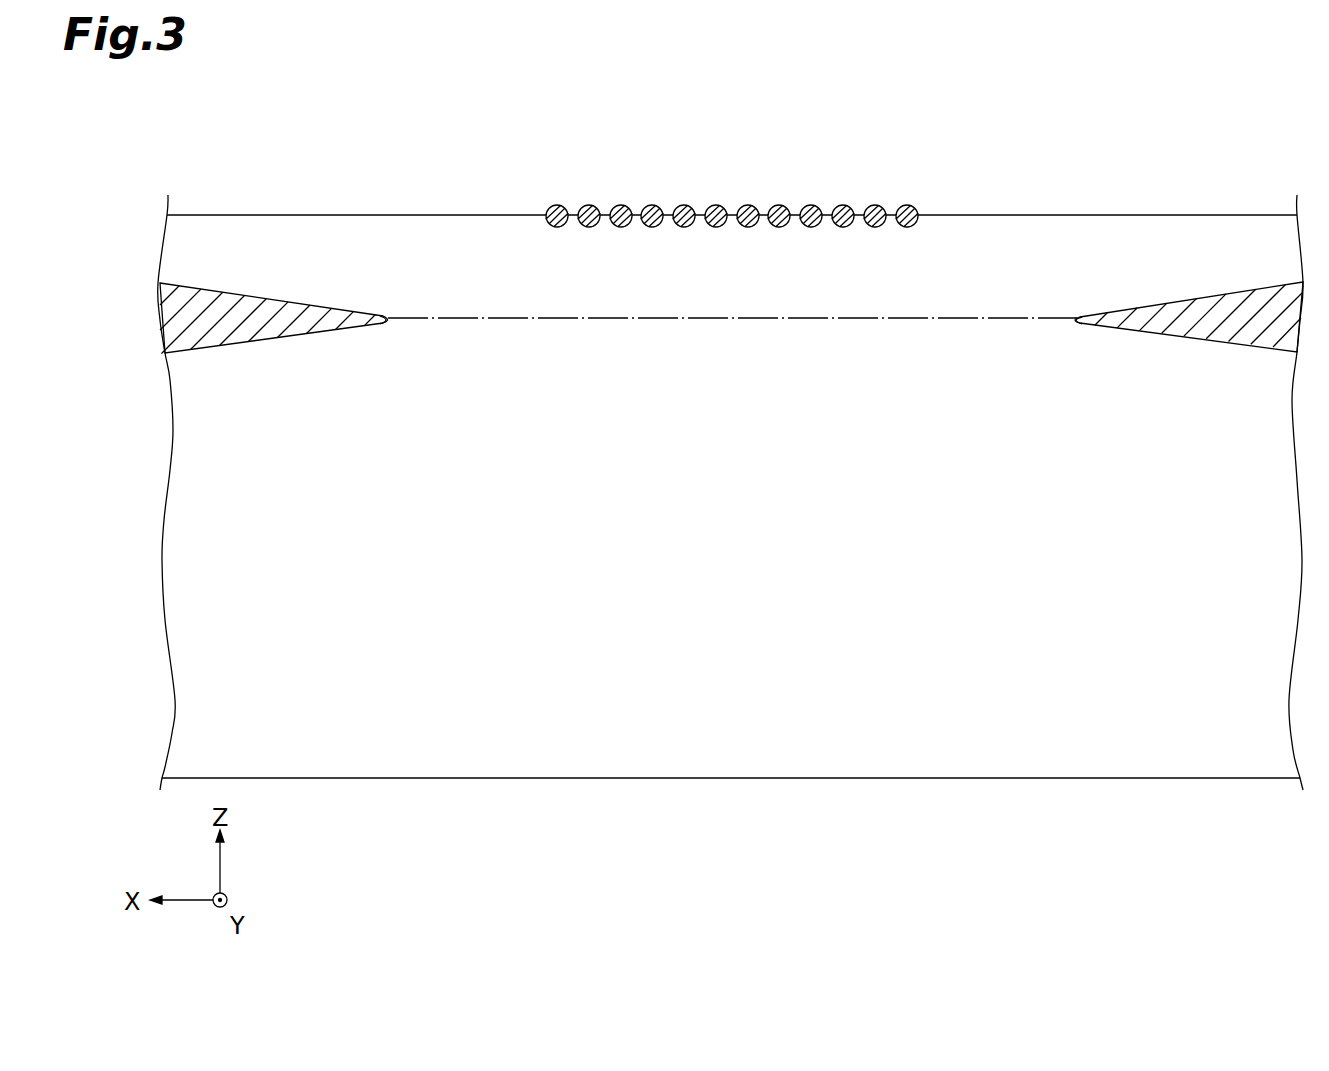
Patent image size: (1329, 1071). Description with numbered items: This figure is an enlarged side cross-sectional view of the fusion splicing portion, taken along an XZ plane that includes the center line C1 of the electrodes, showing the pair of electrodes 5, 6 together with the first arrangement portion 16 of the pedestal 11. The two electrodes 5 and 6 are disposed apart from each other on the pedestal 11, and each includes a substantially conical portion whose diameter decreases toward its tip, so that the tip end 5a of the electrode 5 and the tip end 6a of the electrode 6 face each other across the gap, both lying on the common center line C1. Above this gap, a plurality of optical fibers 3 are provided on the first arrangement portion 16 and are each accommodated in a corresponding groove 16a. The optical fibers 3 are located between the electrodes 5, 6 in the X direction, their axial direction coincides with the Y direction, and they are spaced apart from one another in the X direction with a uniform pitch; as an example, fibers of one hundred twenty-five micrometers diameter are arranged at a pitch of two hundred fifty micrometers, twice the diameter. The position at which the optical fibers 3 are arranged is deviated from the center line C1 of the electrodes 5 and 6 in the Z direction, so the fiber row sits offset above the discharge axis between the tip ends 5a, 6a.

The pedestal 11 is at (1222, 213).
The first arrangement portion 16 is at (732, 154).
The groove 16a is at (650, 205).
The optical fiber 3 is at (682, 206).
The electrode 5 is at (262, 340).
The tip end 5a is at (385, 326).
The electrode 6 is at (1205, 332).
The tip end 6a is at (1076, 324).
The center line C1 is at (965, 318).